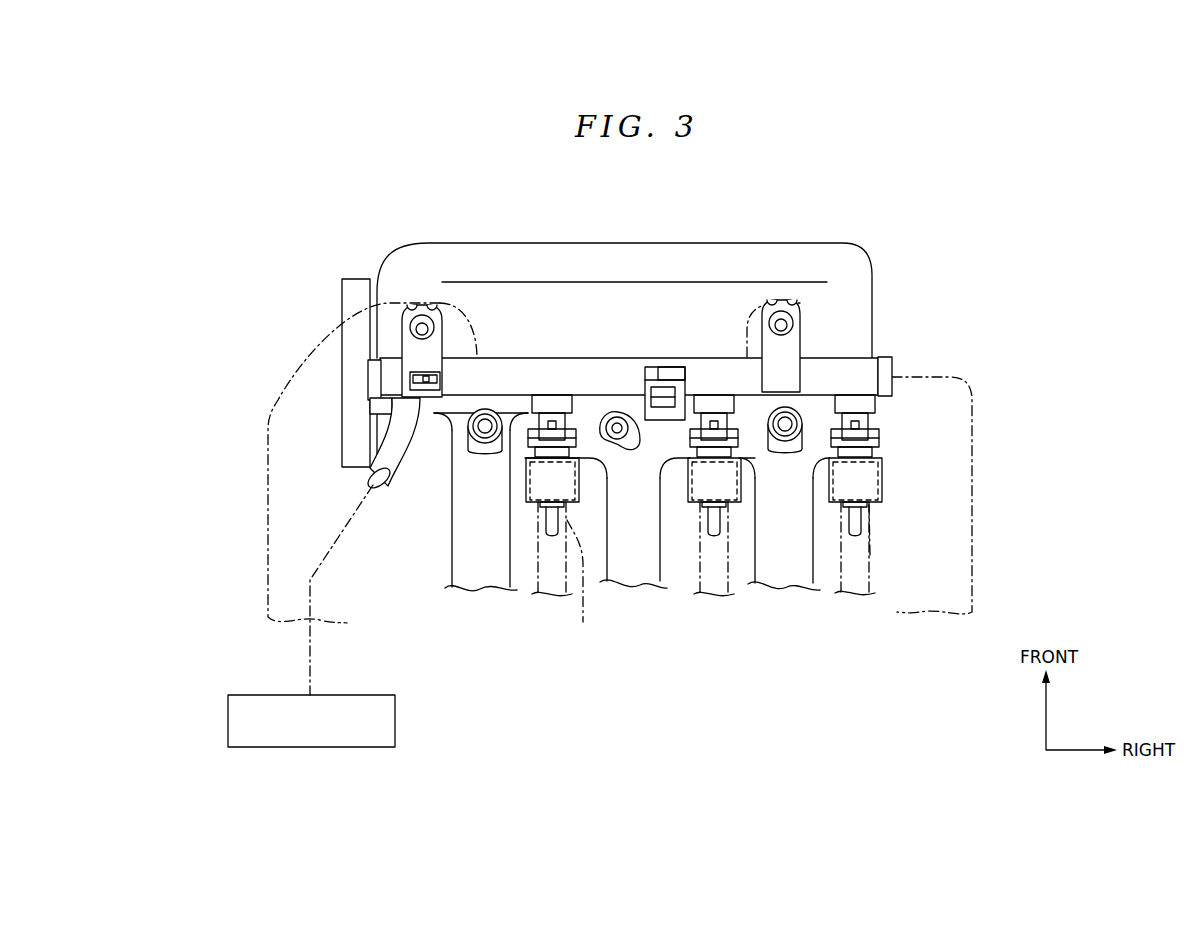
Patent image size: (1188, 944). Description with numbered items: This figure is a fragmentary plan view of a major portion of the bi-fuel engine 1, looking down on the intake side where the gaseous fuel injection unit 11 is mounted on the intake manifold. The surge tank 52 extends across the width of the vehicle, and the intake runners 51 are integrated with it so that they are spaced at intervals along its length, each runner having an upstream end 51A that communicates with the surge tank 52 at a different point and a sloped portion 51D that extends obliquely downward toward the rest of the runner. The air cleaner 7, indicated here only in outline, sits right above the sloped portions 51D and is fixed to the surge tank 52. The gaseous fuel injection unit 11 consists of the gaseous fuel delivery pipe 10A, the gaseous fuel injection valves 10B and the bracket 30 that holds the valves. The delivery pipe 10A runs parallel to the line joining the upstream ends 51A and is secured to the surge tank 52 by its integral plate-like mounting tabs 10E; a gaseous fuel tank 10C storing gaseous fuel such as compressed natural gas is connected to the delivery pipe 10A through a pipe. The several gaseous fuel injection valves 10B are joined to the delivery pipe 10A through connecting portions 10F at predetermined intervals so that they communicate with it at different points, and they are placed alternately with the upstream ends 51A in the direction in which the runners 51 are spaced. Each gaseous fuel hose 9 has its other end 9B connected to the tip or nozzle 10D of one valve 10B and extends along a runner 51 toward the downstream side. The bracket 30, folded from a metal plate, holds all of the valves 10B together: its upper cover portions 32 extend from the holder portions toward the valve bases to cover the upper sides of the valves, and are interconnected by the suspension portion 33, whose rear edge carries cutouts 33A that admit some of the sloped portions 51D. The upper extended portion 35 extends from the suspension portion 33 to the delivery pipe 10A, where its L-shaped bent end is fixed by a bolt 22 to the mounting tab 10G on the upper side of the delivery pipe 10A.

The engine 1 is at (752, 200).
The air cleaner 7 is at (972, 433).
The gaseous fuel hose 9 is at (537, 578).
The other end of gaseous fuel hose 9B is at (918, 584).
The gaseous fuel delivery pipe 10A is at (512, 377).
The gaseous fuel injection valve 10B is at (579, 467).
The gaseous fuel tank 10C is at (228, 718).
The tip (nozzle) 10D is at (562, 515).
The mounting tab 10E is at (477, 353).
The connecting portion 10F is at (550, 404).
The mounting tab 10G is at (677, 378).
The gaseous fuel injection unit 11 is at (888, 350).
The bolt 22 is at (632, 446).
The bracket 30 is at (522, 478).
The upper cover portion 32 is at (547, 480).
The suspension portion 33 is at (628, 418).
The cutout 33A is at (587, 480).
The upper extended portion 35 is at (686, 412).
The intake runner 51 is at (878, 472).
The upstream end of intake runner 51A is at (808, 410).
The sloped portion 51D is at (480, 580).
The surge tank 52 is at (630, 290).